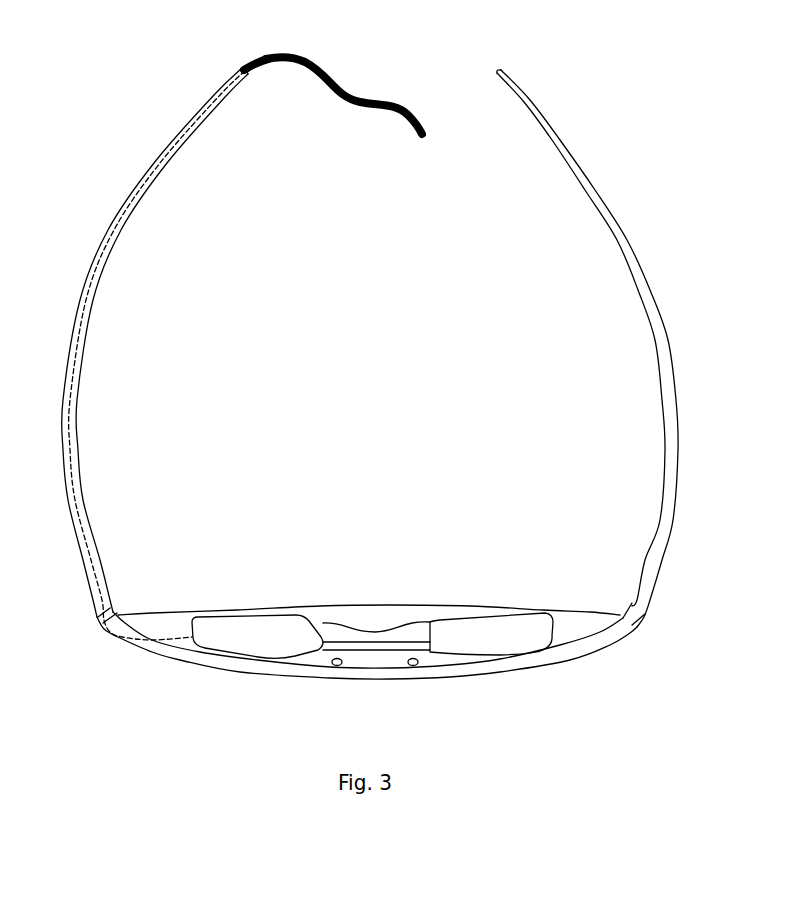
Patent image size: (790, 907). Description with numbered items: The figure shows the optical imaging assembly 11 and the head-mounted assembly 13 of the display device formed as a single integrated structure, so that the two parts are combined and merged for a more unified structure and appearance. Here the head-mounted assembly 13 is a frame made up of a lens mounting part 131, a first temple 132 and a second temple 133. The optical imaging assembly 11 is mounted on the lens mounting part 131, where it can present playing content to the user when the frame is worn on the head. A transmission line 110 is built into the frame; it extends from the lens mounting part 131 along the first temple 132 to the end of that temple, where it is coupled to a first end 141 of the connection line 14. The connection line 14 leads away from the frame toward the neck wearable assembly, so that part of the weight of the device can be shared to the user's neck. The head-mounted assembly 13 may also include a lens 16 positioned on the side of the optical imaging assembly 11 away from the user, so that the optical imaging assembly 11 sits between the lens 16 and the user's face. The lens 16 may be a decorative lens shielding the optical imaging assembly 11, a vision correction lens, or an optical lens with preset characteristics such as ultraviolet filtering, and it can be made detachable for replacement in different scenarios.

The optical imaging assembly 11 is at (282, 612).
The head-mounted assembly 13 is at (367, 674).
The lens mounting part 131 is at (250, 670).
The first temple 132 is at (93, 303).
The second temple 133 is at (650, 305).
The connection line 14 is at (364, 99).
The first end 141 is at (245, 64).
The lens 16 is at (415, 622).
The transmission line 110 is at (110, 250).